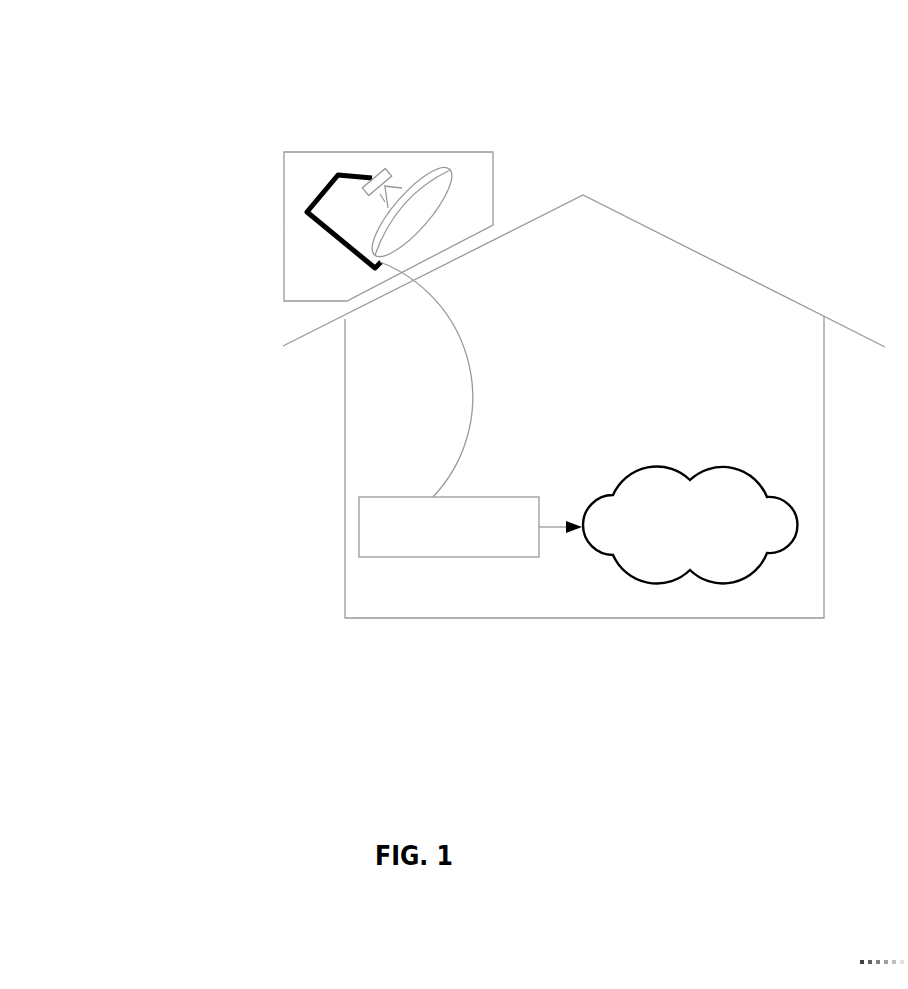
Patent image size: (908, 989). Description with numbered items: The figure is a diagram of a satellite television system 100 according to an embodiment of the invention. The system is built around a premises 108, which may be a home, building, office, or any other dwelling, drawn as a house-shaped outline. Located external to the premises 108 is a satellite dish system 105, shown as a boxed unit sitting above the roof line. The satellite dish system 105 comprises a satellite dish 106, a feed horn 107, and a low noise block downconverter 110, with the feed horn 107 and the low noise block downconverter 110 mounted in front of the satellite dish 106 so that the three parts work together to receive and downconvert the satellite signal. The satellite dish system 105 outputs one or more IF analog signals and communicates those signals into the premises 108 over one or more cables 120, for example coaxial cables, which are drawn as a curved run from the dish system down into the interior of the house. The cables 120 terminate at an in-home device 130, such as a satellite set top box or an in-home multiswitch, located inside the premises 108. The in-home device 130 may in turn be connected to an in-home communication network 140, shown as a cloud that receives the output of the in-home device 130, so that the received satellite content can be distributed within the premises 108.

The satellite television system 100 is at (140, 80).
The satellite dish system 105 is at (473, 152).
The satellite dish 106 is at (457, 184).
The feed horn 107 is at (382, 200).
The premises 108 is at (642, 226).
The low noise block downconverter (LNB) 110 is at (389, 168).
The cables 120 is at (465, 356).
The in-home device 130 is at (359, 526).
The in-home communication network 140 is at (657, 467).